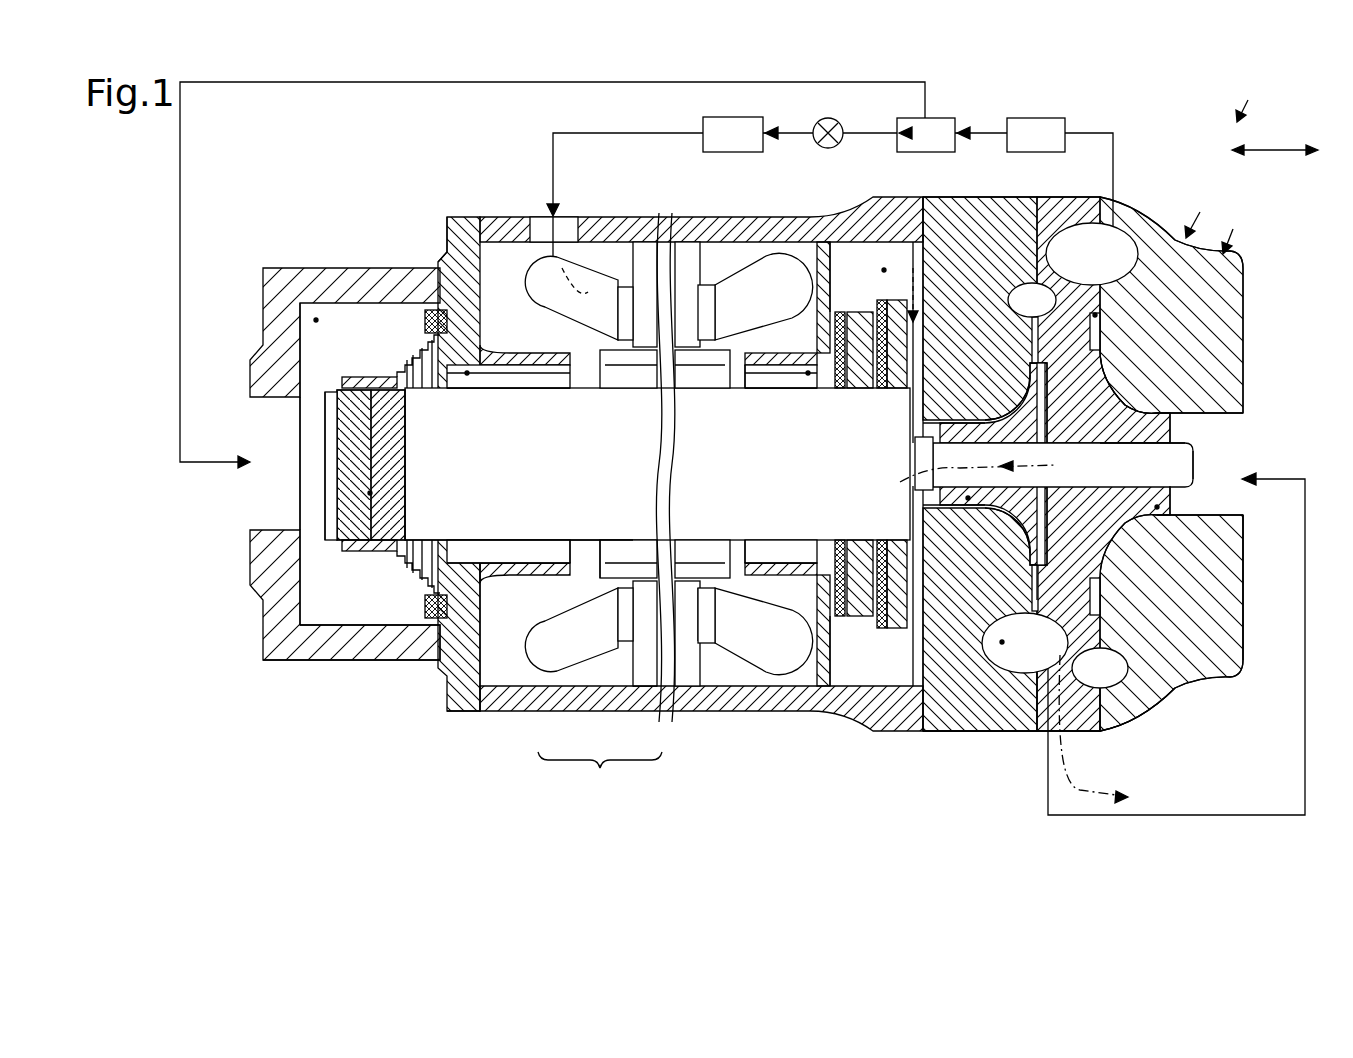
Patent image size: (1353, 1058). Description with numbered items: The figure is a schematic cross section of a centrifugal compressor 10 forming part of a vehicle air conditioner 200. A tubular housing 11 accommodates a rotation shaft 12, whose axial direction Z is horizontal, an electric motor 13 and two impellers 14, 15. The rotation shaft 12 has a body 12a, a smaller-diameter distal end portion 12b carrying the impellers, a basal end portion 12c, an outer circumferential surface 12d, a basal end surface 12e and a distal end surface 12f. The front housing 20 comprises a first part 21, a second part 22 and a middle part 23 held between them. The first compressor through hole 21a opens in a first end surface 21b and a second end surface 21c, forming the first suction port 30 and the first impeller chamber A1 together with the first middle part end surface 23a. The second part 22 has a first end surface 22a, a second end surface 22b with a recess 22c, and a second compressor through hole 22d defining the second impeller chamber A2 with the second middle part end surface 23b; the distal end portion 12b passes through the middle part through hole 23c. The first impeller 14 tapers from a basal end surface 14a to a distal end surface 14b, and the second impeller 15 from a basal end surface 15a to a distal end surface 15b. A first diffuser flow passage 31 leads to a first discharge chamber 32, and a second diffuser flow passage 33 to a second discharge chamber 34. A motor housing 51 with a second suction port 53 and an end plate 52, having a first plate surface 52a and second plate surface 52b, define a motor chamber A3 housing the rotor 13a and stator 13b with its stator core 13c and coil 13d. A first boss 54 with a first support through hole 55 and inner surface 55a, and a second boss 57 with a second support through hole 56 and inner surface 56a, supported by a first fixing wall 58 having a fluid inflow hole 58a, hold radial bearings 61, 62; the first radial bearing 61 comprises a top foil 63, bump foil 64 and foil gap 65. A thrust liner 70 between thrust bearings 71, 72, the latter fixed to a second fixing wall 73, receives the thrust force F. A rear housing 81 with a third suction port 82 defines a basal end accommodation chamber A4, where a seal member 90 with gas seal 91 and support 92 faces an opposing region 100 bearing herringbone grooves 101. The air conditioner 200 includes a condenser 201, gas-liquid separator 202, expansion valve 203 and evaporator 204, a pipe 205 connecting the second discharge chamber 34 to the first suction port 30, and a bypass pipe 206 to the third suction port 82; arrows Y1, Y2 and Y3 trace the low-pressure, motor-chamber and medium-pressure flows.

The centrifugal compressor 10 is at (1197, 212).
The housing 11 is at (1233, 228).
The rotation shaft 12 is at (705, 545).
The body 12a is at (806, 580).
The distal end portion 12b is at (1172, 423).
The basal end portion 12c is at (435, 620).
The outer circumferential surface 12d is at (513, 542).
The basal end surface 12e is at (327, 555).
The distal end surface 12f is at (1197, 463).
The electric motor 13 is at (689, 238).
The rotor 13a is at (632, 556).
The stator 13b is at (600, 769).
The stator core 13c is at (655, 700).
The coil 13d is at (557, 655).
The first impeller 14 is at (1108, 420).
The basal end surface 14a is at (1100, 352).
The distal end surface 14b is at (1197, 475).
The second impeller 15 is at (968, 565).
The basal end surface 15a is at (1068, 505).
The distal end surface 15b is at (920, 455).
The front housing 20 is at (1083, 445).
The first part 21 is at (1127, 212).
The first compressor through hole 21a is at (1228, 415).
The first end surface 21b is at (1098, 718).
The second end surface 21c is at (1244, 600).
The second part 22 is at (950, 205).
The first end surface 22a is at (1042, 705).
The second end surface 22b is at (920, 715).
The recess 22c is at (935, 538).
The second compressor through hole 22d is at (930, 428).
The middle part 23 is at (1044, 205).
The first middle part end surface 23a is at (1106, 695).
The second middle part end surface 23b is at (1022, 700).
The middle part through hole 23c is at (1112, 690).
The first suction port 30 is at (1238, 513).
The first diffuser flow passage 31 is at (1097, 315).
The first discharge chamber 32 is at (1126, 248).
The second diffuser flow passage 33 is at (1036, 593).
The second discharge chamber 34 is at (1002, 647).
The motor housing 51 is at (776, 228).
The end plate 52 is at (462, 226).
The first plate surface 52a is at (440, 258).
The second plate surface 52b is at (446, 232).
The second suction port 53 is at (540, 228).
The first boss 54 is at (515, 355).
The first support through hole 55 is at (516, 375).
The inner surface 55a is at (508, 430).
The second support through hole 56 is at (785, 375).
The inner surface 56a is at (781, 430).
The second boss 57 is at (757, 375).
The first fixing wall 58 is at (805, 300).
The fluid inflow hole 58a is at (826, 262).
The first radial bearing 61 is at (478, 565).
The second radial bearing 62 is at (755, 575).
The top foil 63 is at (526, 560).
The bump foil 64 is at (553, 560).
The foil gap 65 is at (467, 375).
The thrust liner 70 is at (858, 375).
The first thrust bearing 71 is at (862, 618).
The second thrust bearing 72 is at (882, 610).
The second fixing wall 73 is at (905, 340).
The rear housing 81 is at (348, 640).
The third suction port 82 is at (265, 525).
The seal member 90 is at (364, 562).
The gas seal 91 is at (355, 378).
The support 92 is at (408, 350).
The opposing region 100 is at (368, 494).
The grooves 101 is at (382, 438).
The vehicle air conditioner 200 is at (1250, 96).
The condenser 201 is at (1018, 118).
The gas-liquid separator 202 is at (945, 118).
The expansion valve 203 is at (833, 118).
The evaporator 204 is at (708, 117).
The pipe 205 is at (1188, 816).
The bypass pipe 206 is at (524, 83).
The first impeller chamber A1 is at (1160, 509).
The second impeller chamber A2 is at (966, 498).
The motor chamber A3 is at (885, 268).
The basal end accommodation chamber A4 is at (315, 318).
The thrust force F is at (968, 477).
The arrow Y1 is at (579, 298).
The arrow Y2 is at (900, 290).
The arrow Y3 is at (1106, 729).
The axial direction Z is at (1275, 138).